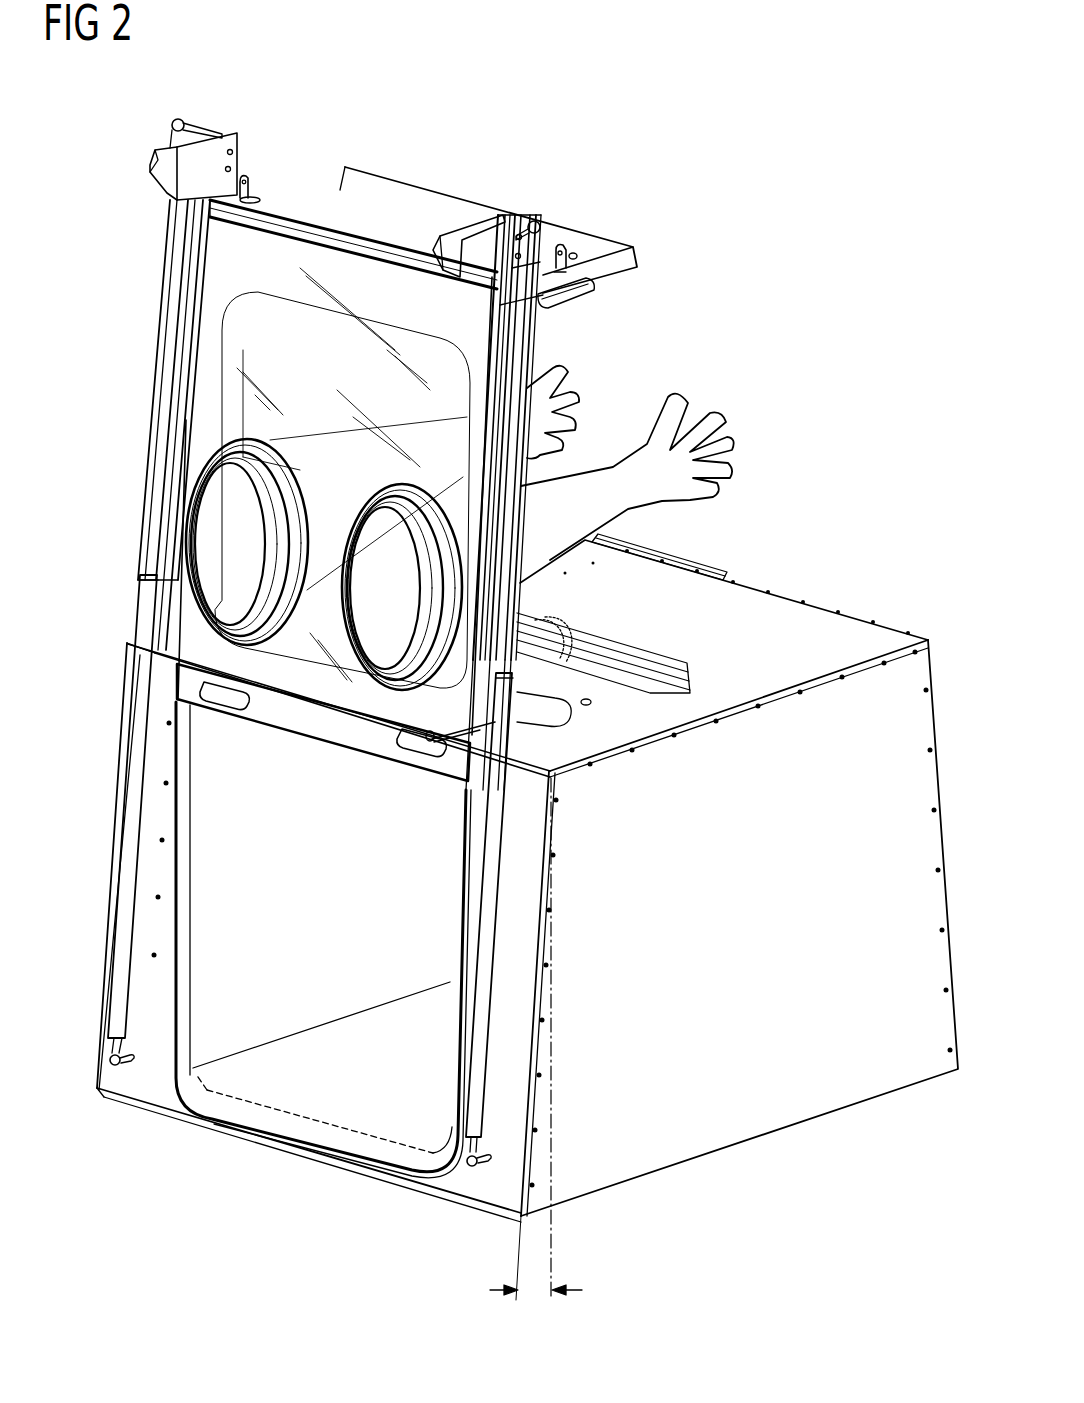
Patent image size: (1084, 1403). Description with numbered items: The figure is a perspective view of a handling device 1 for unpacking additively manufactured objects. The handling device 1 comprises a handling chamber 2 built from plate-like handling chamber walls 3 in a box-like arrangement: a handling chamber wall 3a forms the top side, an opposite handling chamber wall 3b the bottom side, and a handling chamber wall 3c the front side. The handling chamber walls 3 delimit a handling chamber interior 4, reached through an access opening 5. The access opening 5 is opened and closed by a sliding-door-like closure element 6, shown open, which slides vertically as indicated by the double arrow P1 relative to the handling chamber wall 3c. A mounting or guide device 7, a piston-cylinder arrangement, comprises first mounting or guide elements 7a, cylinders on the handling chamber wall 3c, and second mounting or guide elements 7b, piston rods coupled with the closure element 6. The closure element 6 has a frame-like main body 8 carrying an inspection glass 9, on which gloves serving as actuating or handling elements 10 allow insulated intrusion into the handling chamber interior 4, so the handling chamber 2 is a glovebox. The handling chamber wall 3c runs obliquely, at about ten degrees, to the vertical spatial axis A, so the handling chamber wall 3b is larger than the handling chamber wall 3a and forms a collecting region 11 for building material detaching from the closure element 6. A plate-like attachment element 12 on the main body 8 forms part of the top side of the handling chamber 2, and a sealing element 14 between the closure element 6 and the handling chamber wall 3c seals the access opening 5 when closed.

The handling device 1 is at (735, 136).
The handling chamber 2 is at (897, 593).
The handling chamber walls 3 is at (527, 893).
The handling chamber wall 3a is at (814, 622).
The handling chamber wall 3b is at (312, 1150).
The handling chamber wall 3c is at (452, 1160).
The handling chamber interior 4 is at (371, 956).
The access opening 5 is at (374, 1085).
The closure element 6 is at (153, 246).
The mounting or guide device 7 is at (503, 1046).
The first mounting or guide elements 7a is at (492, 946).
The second mounting or guide elements 7b is at (534, 247).
The main body 8 is at (271, 273).
The inspection glass 9 is at (322, 270).
The actuating or handling elements 10 is at (712, 422).
The collecting region 11 is at (251, 1104).
The attachment element 12 is at (588, 246).
The sealing element 14 is at (568, 300).
The double arrow P1 is at (138, 460).
The vertical spatial axis A is at (556, 1126).